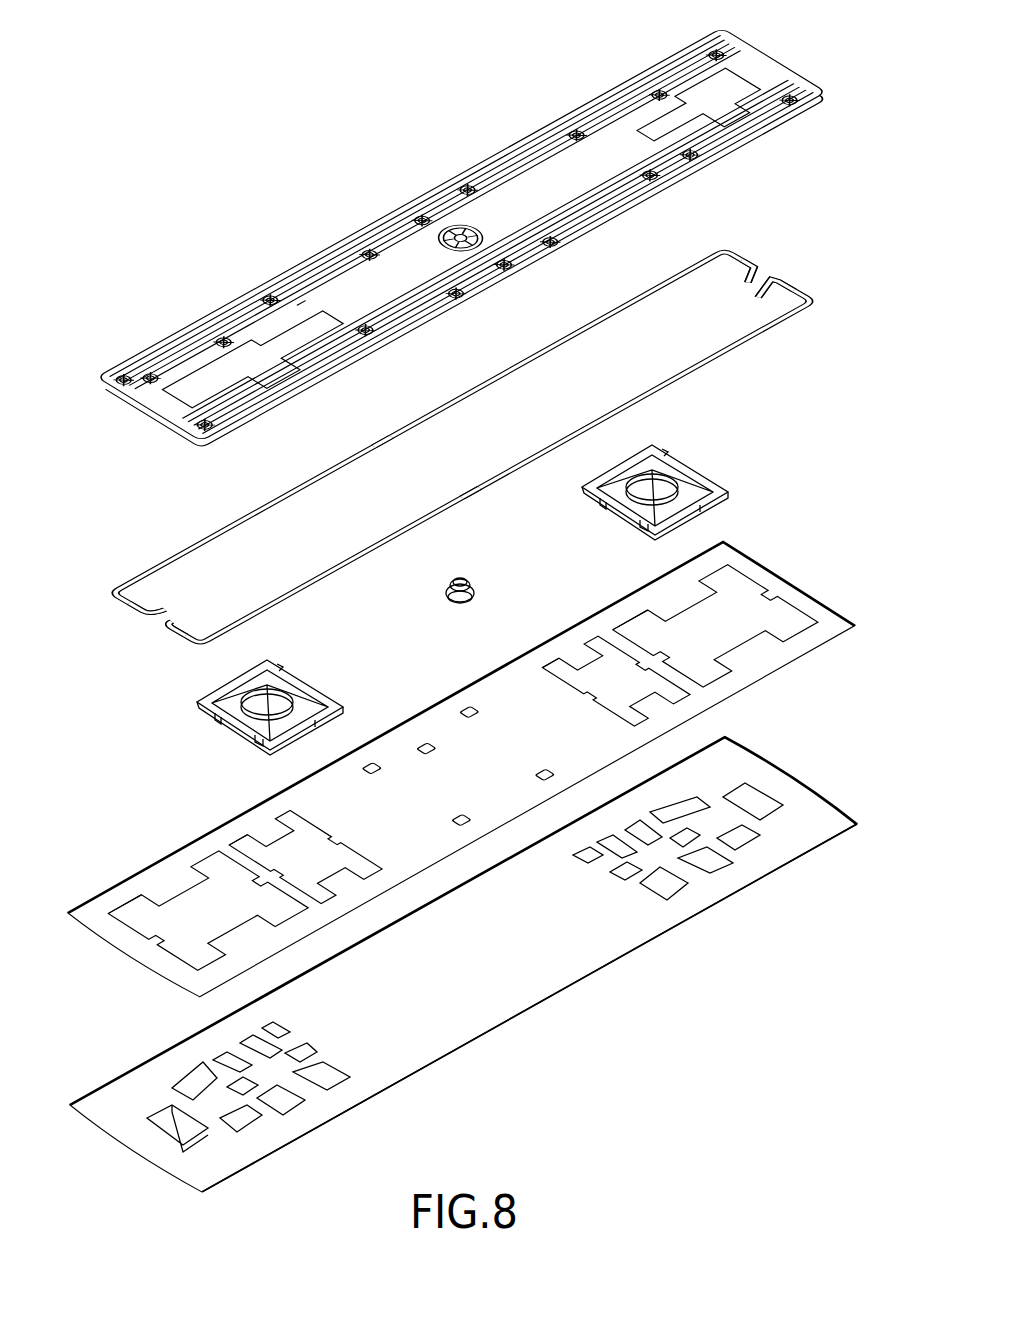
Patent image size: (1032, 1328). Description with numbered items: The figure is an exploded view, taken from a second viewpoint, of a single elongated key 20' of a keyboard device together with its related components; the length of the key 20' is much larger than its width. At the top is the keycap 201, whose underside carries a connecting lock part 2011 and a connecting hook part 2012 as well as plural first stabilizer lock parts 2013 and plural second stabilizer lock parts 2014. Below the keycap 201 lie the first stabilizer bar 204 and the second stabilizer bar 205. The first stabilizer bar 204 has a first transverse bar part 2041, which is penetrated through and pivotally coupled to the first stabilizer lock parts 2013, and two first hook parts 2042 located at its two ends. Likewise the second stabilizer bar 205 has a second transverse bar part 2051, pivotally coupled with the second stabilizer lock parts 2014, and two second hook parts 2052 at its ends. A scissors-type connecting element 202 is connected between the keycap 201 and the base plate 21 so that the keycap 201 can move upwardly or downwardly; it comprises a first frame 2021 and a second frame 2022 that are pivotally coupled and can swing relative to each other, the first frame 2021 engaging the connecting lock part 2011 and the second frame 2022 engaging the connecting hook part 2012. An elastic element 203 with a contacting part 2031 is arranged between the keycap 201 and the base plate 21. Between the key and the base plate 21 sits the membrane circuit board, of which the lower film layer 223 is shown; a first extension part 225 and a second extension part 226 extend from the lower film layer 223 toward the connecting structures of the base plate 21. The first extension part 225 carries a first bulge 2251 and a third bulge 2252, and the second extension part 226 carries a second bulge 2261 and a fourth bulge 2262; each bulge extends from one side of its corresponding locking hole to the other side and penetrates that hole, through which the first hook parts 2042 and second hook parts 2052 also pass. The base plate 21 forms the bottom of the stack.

The key 20' is at (249, 262).
The keycap 201 is at (402, 210).
The connecting lock part 2011 is at (700, 140).
The connecting hook part 2012 is at (658, 92).
The first stabilizer lock parts 2013 is at (735, 36).
The second stabilizer lock parts 2014 is at (803, 105).
The connecting element 202 is at (683, 445).
The first frame 2021 is at (708, 475).
The second frame 2022 is at (615, 510).
The elastic element 203 is at (478, 597).
The contacting part 2031 is at (450, 607).
The first stabilizer bar 204 is at (187, 538).
The first transverse bar part 2041 is at (490, 385).
The first hook parts 2042 is at (740, 290).
The second stabilizer bar 205 is at (375, 560).
The second transverse bar part 2051 is at (475, 498).
The second hook parts 2052 is at (770, 275).
The base plate 21 is at (480, 1005).
The lower film layer 223 is at (490, 700).
The first extension part 225 is at (768, 590).
The first bulge 2251 is at (760, 590).
The third bulge 2252 is at (775, 625).
The second extension part 226 is at (160, 940).
The second bulge 2261 is at (157, 933).
The fourth bulge 2262 is at (170, 933).